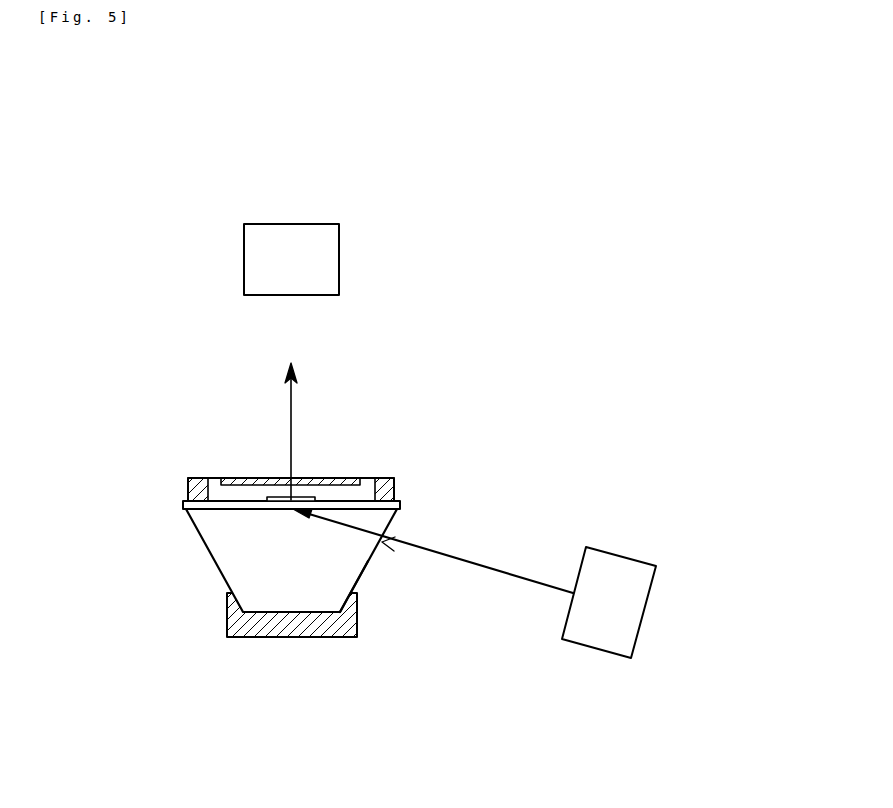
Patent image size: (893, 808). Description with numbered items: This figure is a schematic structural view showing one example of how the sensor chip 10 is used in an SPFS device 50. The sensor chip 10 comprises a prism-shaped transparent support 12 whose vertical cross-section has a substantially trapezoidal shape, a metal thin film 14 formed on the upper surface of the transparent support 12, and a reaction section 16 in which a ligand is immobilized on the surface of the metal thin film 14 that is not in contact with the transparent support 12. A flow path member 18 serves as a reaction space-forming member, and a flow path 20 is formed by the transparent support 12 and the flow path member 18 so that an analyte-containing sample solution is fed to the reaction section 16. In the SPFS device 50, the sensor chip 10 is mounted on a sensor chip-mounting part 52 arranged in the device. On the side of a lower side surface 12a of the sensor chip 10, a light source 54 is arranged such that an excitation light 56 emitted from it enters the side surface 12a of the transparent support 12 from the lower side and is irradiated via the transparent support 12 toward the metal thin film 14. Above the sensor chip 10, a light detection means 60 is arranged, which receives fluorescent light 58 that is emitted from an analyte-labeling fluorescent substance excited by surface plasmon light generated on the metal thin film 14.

The sensor chip 10 is at (466, 626).
The transparent support 12 is at (248, 563).
The lower side surface 12a is at (360, 583).
The metal thin film 14 is at (215, 508).
The reaction section 16 is at (313, 500).
The flow path member 18 is at (190, 478).
The flow path 20 is at (216, 478).
The SPFS device 50 is at (585, 185).
The sensor chip-mounting part 52 is at (280, 634).
The light source 54 is at (618, 608).
The excitation light 56 is at (478, 565).
The fluorescent light 58 is at (287, 413).
The light detection means 60 is at (305, 262).